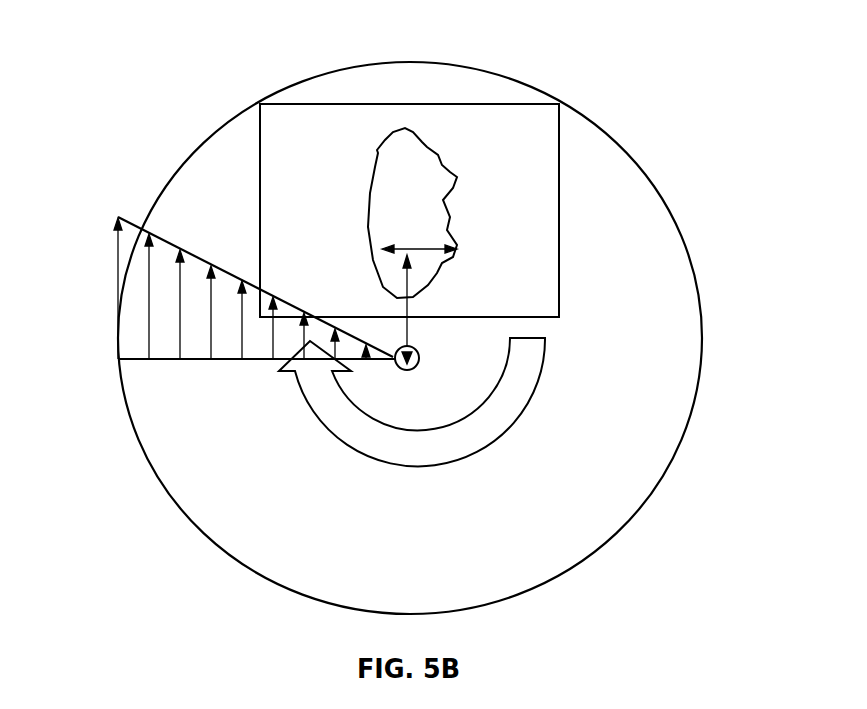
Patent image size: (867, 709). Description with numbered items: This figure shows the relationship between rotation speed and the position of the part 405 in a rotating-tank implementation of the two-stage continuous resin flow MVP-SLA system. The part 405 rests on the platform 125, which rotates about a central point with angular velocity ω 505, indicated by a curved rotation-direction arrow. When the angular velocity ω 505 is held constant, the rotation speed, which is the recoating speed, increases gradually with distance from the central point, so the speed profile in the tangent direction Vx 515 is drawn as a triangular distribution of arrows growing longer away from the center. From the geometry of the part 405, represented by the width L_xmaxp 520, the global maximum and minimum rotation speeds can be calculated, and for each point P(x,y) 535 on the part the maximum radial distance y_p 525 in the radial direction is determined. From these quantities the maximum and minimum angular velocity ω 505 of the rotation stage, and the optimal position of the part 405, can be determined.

The platform 125 is at (408, 104).
The part 405 is at (423, 145).
The L_xmaxp 520 is at (523, 208).
The point P(x,y) 535 is at (407, 249).
The maximum radial distance y_p 525 is at (409, 324).
The tangent direction Vx 515 is at (116, 247).
The angular velocity ω 505 is at (497, 438).